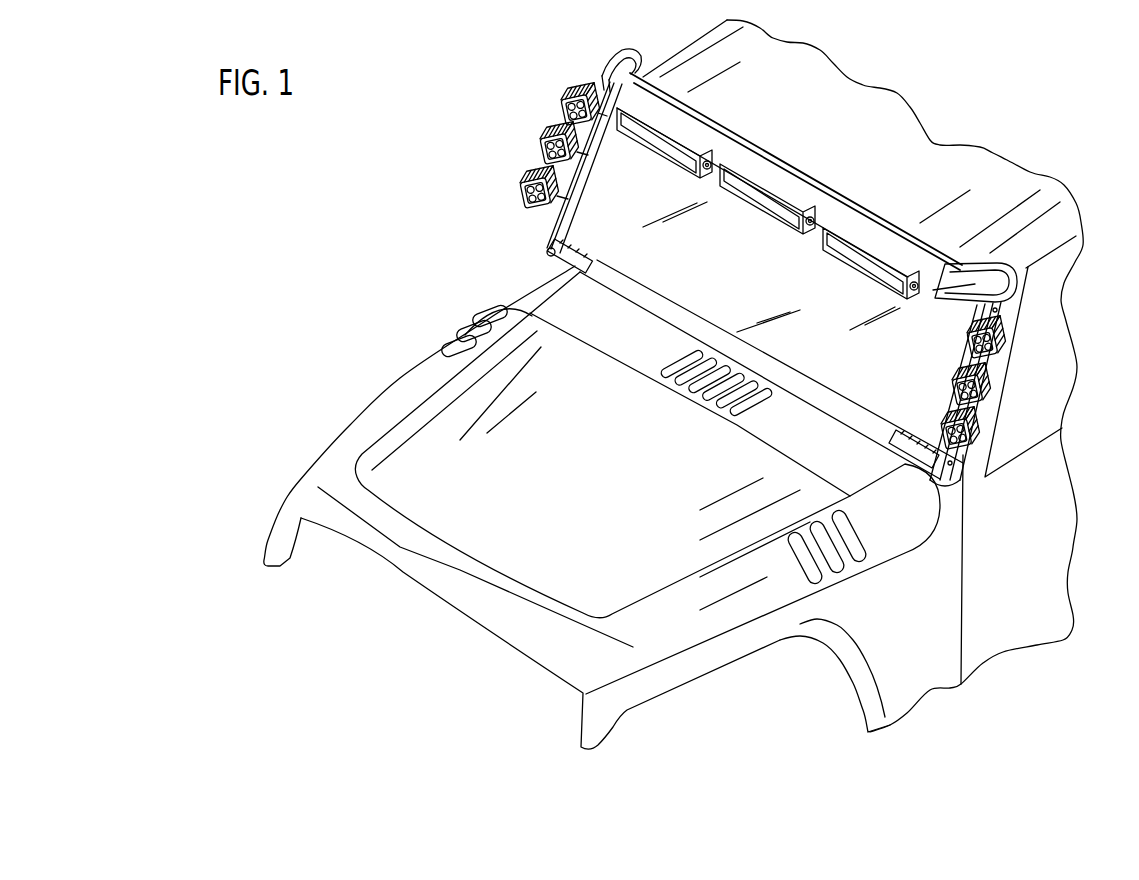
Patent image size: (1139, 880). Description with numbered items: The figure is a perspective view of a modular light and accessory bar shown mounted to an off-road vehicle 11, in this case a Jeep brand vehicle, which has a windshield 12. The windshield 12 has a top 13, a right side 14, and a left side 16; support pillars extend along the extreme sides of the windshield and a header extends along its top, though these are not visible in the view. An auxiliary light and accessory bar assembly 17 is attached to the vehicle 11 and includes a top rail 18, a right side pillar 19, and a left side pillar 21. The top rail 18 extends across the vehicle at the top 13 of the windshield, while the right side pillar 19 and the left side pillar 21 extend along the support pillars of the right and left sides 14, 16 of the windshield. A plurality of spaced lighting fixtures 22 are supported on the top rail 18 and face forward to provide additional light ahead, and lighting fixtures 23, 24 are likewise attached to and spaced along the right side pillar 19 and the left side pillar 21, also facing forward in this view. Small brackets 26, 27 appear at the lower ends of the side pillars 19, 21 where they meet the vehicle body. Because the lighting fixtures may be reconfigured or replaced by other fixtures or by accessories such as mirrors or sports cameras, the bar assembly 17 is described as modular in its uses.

The vehicle 11 is at (996, 115).
The windshield 12 is at (730, 294).
The top 13 is at (803, 267).
The right side 14 is at (587, 207).
The left side 16 is at (947, 360).
The auxiliary light and accessory bar assembly 17 is at (788, 147).
The top rail 18 is at (727, 147).
The right side pillar 19 is at (598, 128).
The left side pillar 21 is at (953, 407).
The lighting fixtures 22 is at (763, 203).
The lighting fixtures 23 is at (549, 125).
The lighting fixtures 24 is at (970, 432).
The left lower mounting bracket 26 is at (578, 257).
The right lower mounting bracket 27 is at (907, 451).